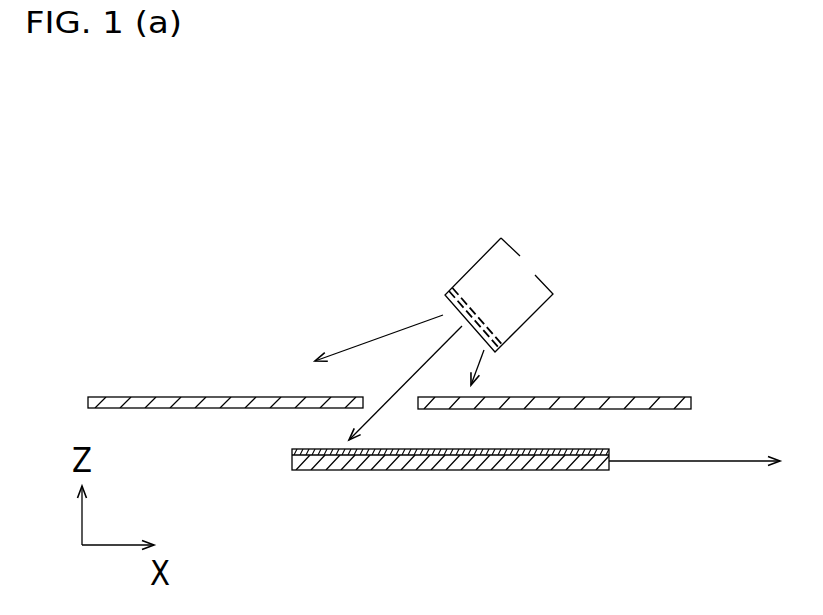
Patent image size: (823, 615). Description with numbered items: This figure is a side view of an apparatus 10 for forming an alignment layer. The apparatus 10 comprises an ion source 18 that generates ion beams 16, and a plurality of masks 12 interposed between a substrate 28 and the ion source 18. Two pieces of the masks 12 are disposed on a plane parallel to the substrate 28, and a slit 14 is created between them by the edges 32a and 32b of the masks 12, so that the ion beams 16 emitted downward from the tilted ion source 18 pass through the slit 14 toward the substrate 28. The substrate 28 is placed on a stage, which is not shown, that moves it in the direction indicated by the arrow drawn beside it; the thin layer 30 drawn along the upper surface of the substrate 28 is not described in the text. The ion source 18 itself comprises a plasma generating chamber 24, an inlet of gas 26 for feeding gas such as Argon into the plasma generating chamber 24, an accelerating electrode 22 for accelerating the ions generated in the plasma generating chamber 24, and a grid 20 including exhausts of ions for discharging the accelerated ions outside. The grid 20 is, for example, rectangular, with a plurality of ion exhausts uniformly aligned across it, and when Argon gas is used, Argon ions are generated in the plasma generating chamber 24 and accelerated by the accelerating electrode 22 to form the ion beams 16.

The apparatus for forming an alignment layer 10 is at (300, 265).
The masks 12 is at (168, 397).
The slit 14 is at (377, 391).
The ion beams 16 is at (407, 382).
The ion source 18 is at (454, 259).
The grid 20 is at (439, 302).
The accelerating electrode 22 is at (490, 333).
The plasma generating chamber 24 is at (523, 304).
The inlet of gas 26 is at (538, 263).
The substrate 28 is at (519, 471).
The surface layer of substrate 30 is at (552, 450).
The edge of mask 32a is at (359, 413).
The edge of mask 32b is at (421, 413).